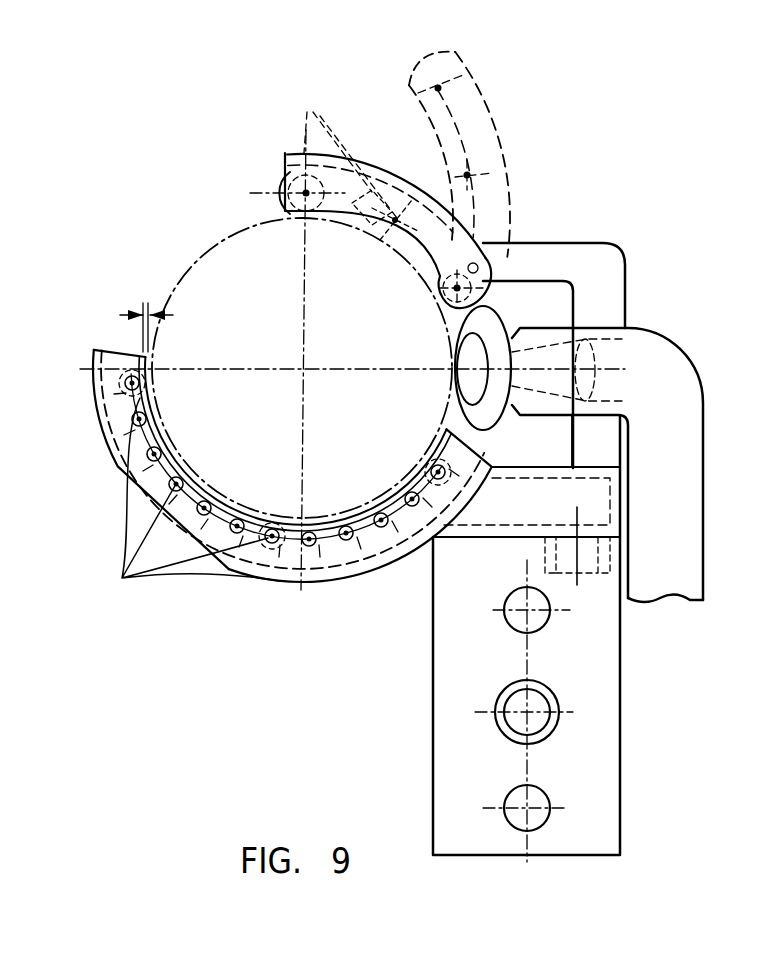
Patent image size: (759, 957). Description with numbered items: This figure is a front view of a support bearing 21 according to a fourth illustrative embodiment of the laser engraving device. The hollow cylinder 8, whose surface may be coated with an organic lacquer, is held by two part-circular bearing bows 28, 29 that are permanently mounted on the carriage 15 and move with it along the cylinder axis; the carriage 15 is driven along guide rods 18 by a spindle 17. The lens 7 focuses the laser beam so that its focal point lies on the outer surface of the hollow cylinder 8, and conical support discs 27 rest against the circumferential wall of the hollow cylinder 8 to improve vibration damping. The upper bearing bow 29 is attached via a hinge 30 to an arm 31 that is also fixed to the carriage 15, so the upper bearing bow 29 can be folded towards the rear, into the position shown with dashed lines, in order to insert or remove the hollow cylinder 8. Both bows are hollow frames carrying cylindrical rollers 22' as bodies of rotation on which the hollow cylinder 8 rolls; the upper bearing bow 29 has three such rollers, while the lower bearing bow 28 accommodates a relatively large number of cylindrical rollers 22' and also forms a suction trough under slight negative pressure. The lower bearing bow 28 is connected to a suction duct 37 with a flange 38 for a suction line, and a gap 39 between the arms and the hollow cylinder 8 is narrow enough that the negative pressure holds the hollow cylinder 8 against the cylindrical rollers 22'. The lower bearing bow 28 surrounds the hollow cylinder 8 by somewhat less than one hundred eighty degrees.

The lens 7 is at (597, 372).
The hollow cylinder 8 is at (210, 247).
The carriage 15 is at (597, 672).
The spindle 17 is at (522, 708).
The guide rods 18 is at (522, 604).
The support bearing 21 is at (205, 585).
The cylindrical rollers 22' is at (275, 342).
The conical support discs 27 is at (493, 338).
The lower bearing bow 28 is at (118, 470).
The upper bearing bow 29 is at (348, 152).
The hinge 30 is at (487, 248).
The arm 31 is at (595, 263).
The suction duct 37 is at (557, 490).
The flange 38 is at (620, 560).
The gap 39 is at (147, 310).